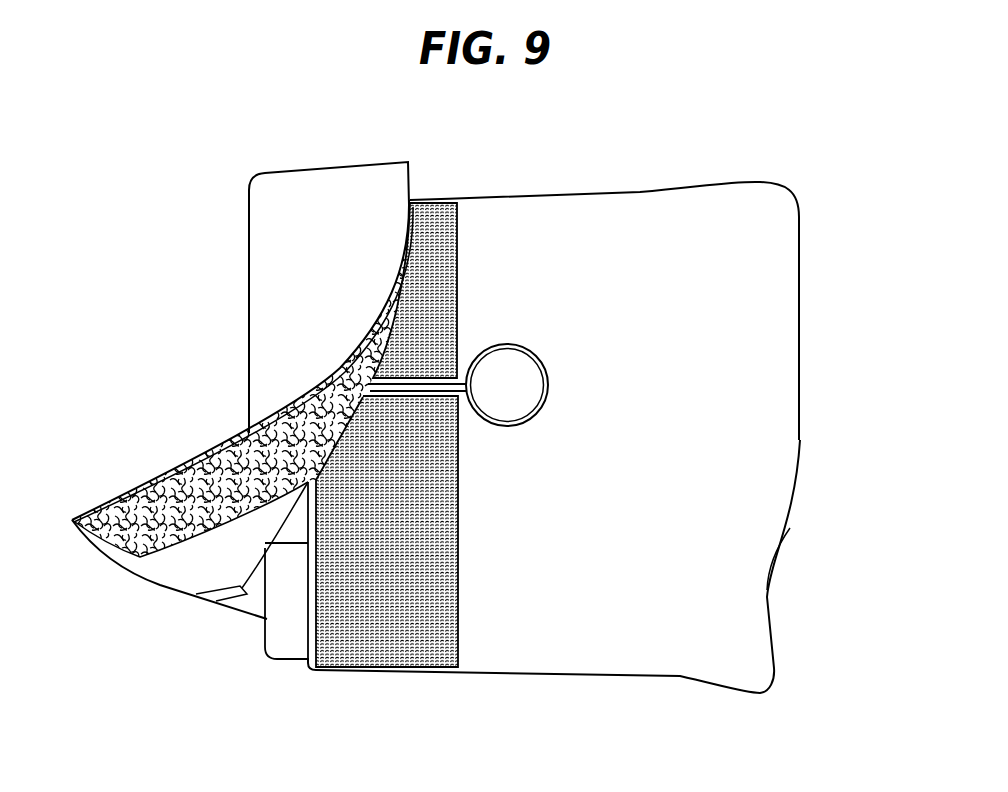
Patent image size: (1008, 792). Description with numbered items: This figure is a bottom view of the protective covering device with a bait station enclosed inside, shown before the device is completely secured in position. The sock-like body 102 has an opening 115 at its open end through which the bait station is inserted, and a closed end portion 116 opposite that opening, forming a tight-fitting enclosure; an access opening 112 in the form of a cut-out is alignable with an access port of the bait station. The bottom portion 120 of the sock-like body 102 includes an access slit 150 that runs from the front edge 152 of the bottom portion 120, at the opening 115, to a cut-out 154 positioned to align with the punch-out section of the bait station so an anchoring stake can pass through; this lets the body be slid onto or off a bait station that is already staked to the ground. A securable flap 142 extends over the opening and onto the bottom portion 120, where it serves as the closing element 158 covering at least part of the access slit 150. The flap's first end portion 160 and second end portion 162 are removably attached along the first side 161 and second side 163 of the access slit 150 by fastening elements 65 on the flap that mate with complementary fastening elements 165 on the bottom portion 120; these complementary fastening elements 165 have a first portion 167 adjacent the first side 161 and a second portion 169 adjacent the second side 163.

The sock-like body 102 is at (662, 146).
The closed end portion 116 is at (809, 250).
The bottom portion 120 is at (592, 645).
The access opening 112 is at (782, 536).
The first end portion 160 is at (338, 195).
The securable flap 142 is at (265, 356).
The closing element 158 is at (352, 319).
The second end portion 162 is at (136, 478).
The fastening element 65 is at (141, 560).
The first portion of complementary fastening element 167 is at (426, 208).
The first side of access slit 161 is at (400, 357).
The access slit 150 is at (413, 367).
The complementary fastening element 165 is at (420, 387).
The second side of access slit 163 is at (407, 430).
The second portion of complementary fastening element 169 is at (457, 582).
The cut-out 154 is at (525, 386).
The front edge 152 is at (308, 594).
The opening 115 is at (291, 636).